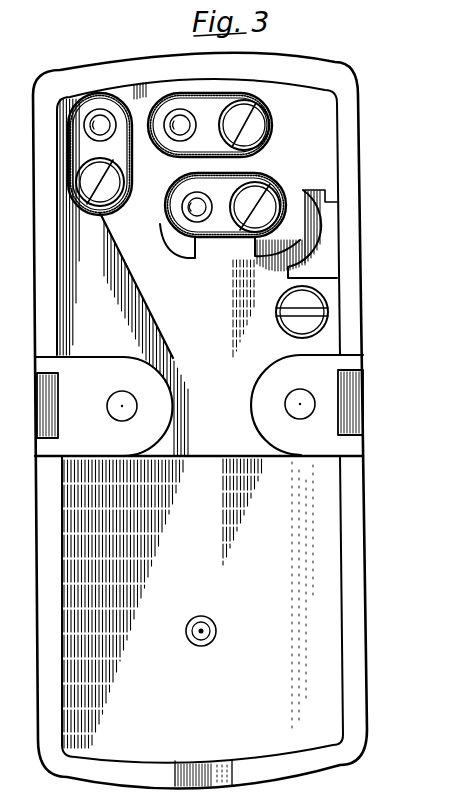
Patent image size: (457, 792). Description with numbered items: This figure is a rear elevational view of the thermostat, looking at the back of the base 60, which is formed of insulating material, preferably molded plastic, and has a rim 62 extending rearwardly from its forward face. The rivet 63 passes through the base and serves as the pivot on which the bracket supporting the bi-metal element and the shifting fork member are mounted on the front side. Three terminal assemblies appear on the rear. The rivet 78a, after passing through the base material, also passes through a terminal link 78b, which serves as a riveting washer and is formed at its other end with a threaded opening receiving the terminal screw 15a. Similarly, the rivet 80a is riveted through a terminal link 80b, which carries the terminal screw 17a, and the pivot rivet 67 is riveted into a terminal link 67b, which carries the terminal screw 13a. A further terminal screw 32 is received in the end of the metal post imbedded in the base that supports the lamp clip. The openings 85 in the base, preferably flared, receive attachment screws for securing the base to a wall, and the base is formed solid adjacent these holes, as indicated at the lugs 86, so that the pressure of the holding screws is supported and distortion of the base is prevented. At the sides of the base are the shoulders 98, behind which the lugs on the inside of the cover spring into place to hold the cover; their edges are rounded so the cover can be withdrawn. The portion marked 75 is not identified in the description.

The terminal screw 13a is at (268, 199).
The terminal screw 15a is at (100, 206).
The terminal screw 17a is at (256, 125).
The terminal screw 32 is at (290, 328).
The base 60 is at (34, 521).
The rim 62 is at (43, 563).
The rivet 63 is at (213, 624).
The pivot rivet 67 is at (197, 223).
The terminal link 67b is at (225, 231).
The casing portion 75 is at (20, 66).
The rivet 78a is at (100, 110).
The terminal link 78b is at (115, 154).
The rivet 80a is at (183, 110).
The terminal link 80b is at (215, 108).
The openings 85 is at (122, 406).
The lugs 86 is at (199, 405).
The shoulders 98 is at (357, 413).